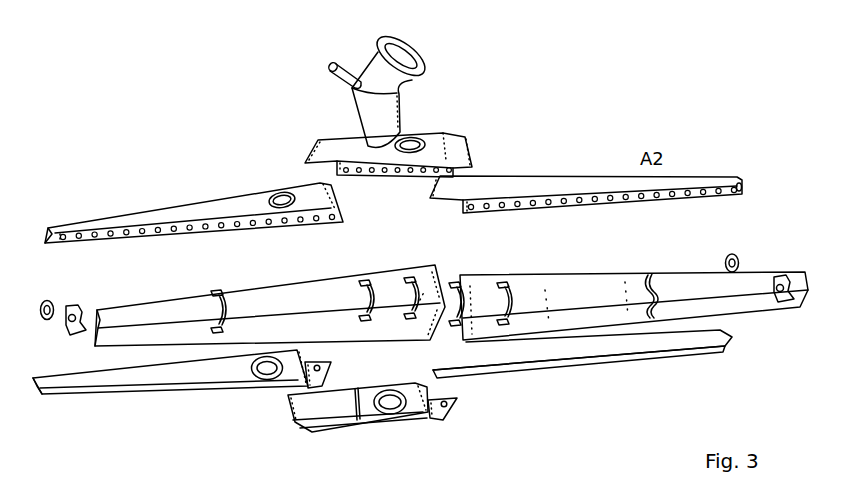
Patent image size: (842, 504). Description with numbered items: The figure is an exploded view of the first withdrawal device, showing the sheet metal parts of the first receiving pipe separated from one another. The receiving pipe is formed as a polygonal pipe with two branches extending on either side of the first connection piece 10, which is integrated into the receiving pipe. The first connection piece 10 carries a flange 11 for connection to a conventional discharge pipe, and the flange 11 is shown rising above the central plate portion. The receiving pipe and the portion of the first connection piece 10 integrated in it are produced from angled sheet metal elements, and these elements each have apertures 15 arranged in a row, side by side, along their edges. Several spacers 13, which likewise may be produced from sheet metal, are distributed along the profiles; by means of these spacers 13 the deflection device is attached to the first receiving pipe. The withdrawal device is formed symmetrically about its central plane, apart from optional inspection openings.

The first connection piece 10 is at (430, 99).
The flange 11 is at (423, 49).
The spacers 13 is at (76, 300).
The apertures 15 is at (328, 227).